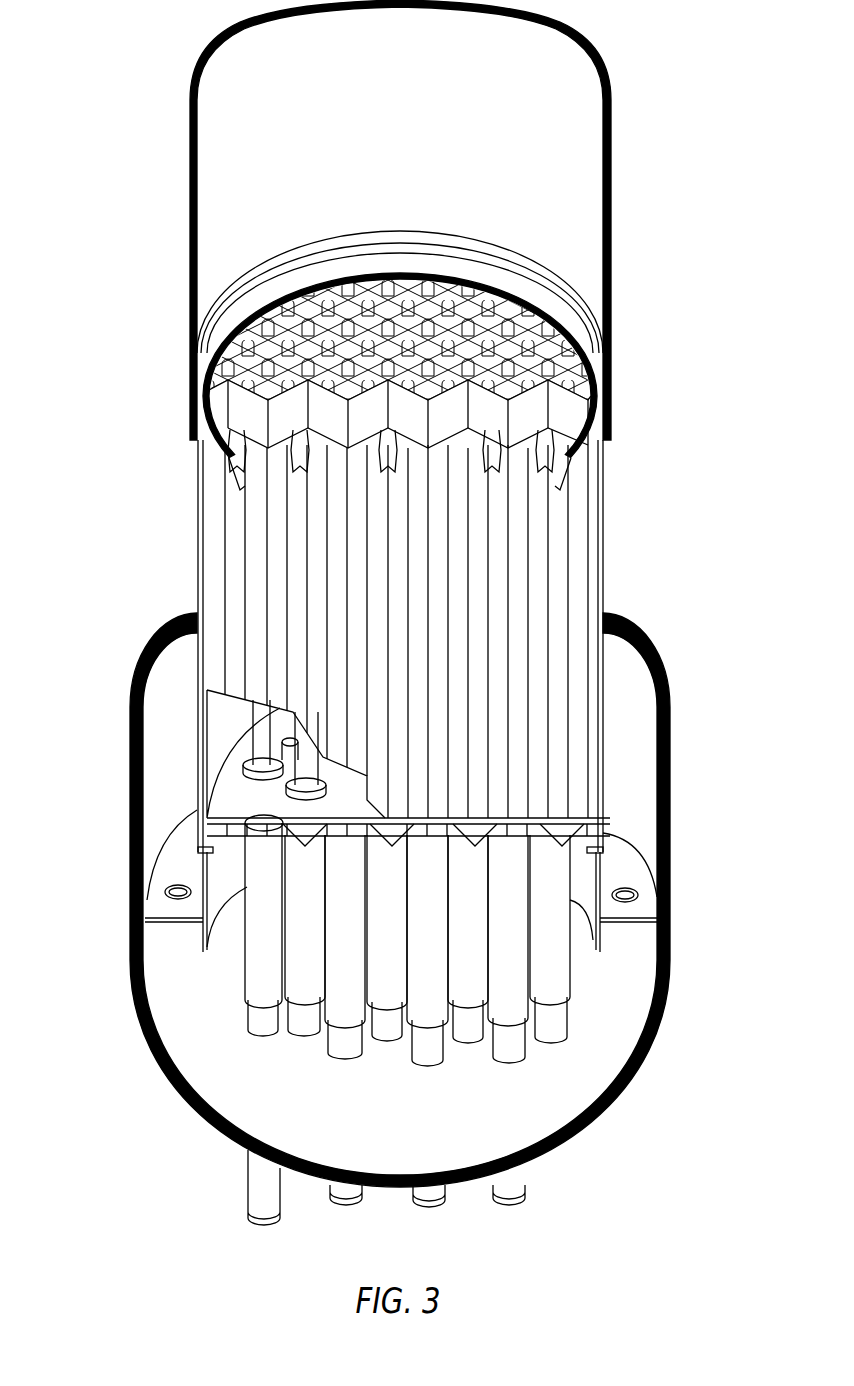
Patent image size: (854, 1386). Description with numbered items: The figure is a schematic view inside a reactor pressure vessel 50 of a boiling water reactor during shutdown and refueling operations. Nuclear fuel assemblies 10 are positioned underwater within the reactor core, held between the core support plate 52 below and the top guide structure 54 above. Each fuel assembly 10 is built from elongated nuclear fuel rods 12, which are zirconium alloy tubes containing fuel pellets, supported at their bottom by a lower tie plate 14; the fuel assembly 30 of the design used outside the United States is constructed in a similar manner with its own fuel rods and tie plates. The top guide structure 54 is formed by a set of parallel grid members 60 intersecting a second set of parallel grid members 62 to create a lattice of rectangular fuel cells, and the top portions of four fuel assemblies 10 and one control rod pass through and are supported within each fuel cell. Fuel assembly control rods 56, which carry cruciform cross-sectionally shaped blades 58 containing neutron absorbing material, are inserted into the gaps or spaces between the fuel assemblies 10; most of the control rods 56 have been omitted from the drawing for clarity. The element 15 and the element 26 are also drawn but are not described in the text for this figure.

The fuel assembly 10 is at (517, 577).
The nuclear fuel rods 12 is at (612, 370).
The lower tie plate 14 is at (604, 588).
The support lug 15 is at (600, 867).
The lower core support plate 26 is at (263, 783).
The boiling water reactor fuel assembly 30 is at (250, 968).
The reactor pressure vessel 50 is at (672, 782).
The core support plate 52 is at (197, 808).
The top guide structure 54 is at (563, 445).
The control rods 56 is at (250, 722).
The blades 58 is at (267, 747).
The parallel grid members 60 is at (487, 450).
The second set of parallel grid members 62 is at (340, 450).